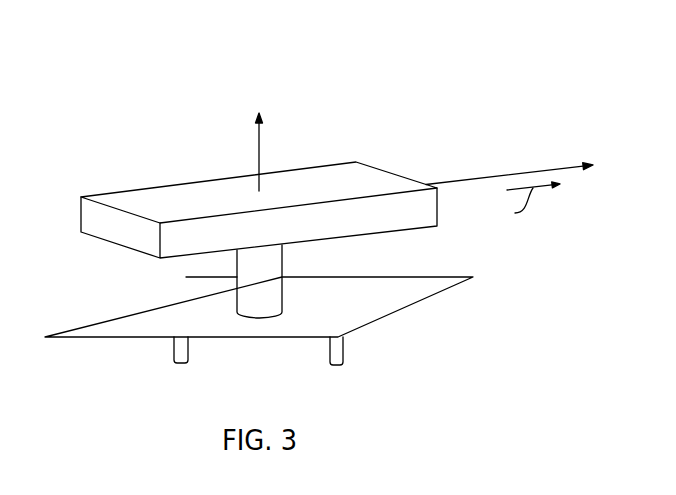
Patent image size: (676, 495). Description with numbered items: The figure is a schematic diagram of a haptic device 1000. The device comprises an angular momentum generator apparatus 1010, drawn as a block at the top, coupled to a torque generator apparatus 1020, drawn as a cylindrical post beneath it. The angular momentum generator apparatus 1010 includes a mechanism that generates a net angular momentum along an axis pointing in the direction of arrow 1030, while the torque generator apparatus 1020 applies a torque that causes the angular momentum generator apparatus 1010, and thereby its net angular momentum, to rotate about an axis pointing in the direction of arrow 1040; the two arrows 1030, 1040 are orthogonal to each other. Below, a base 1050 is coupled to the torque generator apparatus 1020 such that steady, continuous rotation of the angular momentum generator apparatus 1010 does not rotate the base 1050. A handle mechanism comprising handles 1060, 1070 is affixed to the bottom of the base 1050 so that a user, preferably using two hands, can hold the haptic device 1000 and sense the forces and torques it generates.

The haptic device 1000 is at (467, 54).
The angular momentum generator apparatus 1010 is at (138, 189).
The torque generator apparatus 1020 is at (282, 270).
The arrow 1030 is at (518, 174).
The arrow 1040 is at (259, 148).
The base 1050 is at (400, 308).
The handle 1060 is at (188, 355).
The handle 1070 is at (343, 350).